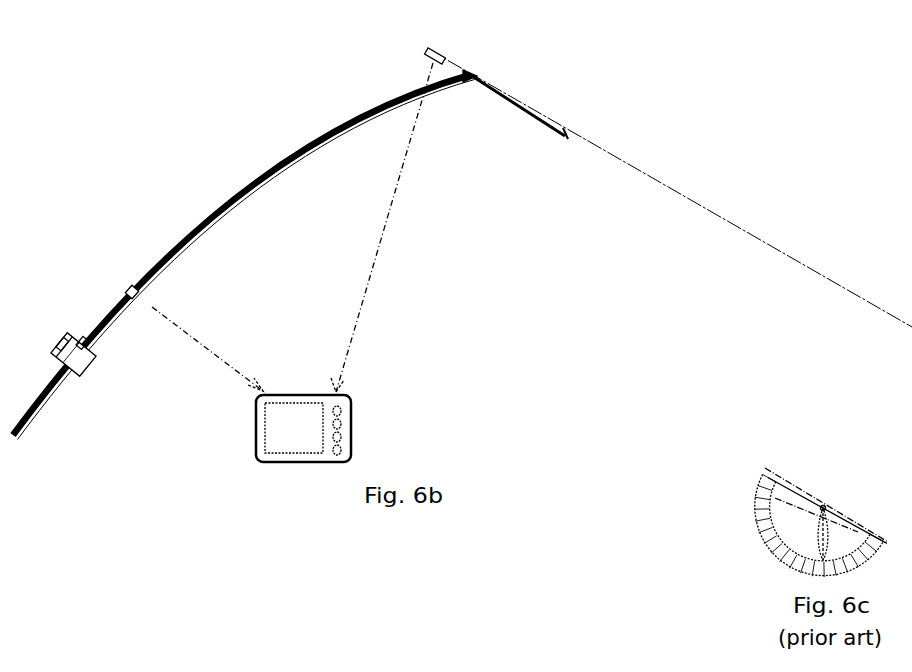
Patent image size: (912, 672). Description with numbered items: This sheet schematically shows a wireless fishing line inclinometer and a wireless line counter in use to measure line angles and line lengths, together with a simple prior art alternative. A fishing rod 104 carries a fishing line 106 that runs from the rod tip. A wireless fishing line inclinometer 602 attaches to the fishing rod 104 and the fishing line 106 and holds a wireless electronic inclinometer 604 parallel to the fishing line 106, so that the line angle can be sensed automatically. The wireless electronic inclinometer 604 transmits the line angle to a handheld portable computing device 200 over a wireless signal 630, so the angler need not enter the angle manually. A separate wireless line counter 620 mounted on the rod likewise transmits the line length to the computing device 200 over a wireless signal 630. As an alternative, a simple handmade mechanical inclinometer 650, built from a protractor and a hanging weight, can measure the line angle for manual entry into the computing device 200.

In FIG. 6B, the fishing rod 104 is at (277, 160).
In FIG. 6B, the fishing line 106 is at (670, 182).
In FIG. 6B, the handheld portable computing device 200 is at (357, 408).
In FIG. 6B, the wireless fishing line inclinometer 602 is at (535, 133).
In FIG. 6B, the wireless electronic inclinometer 604 is at (450, 58).
In FIG. 6B, the wireless line counter 620 is at (128, 291).
In FIG. 6B, the wireless signal 630 is at (378, 282).
In FIG. 6C, the mechanical inclinometer 650 is at (777, 568).